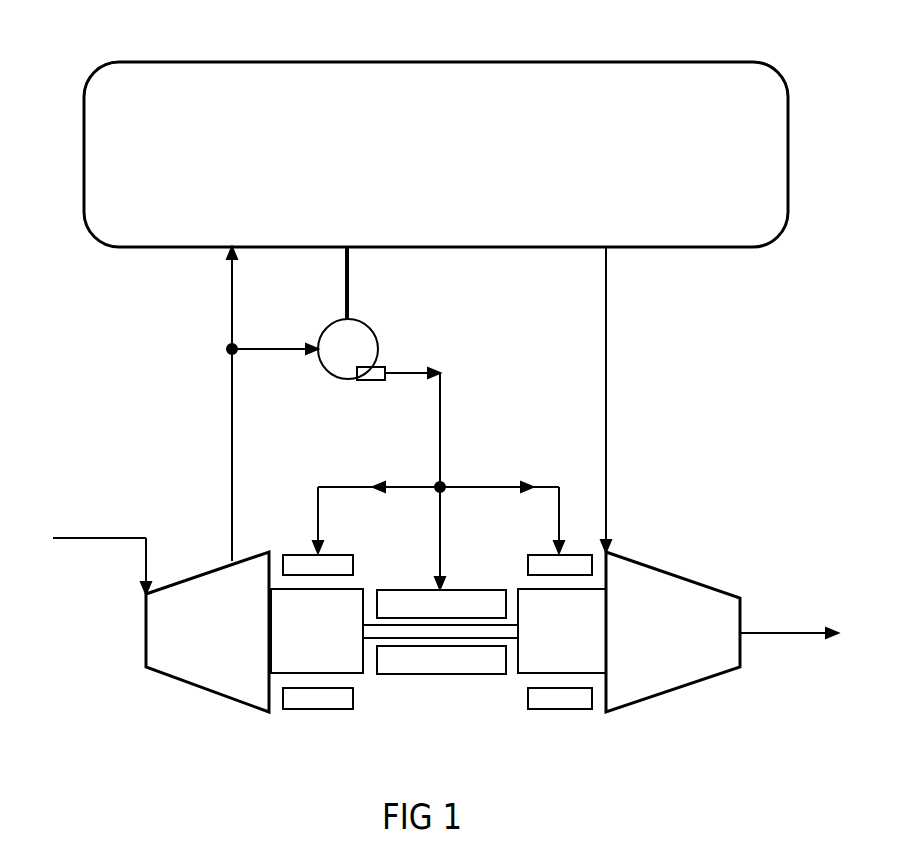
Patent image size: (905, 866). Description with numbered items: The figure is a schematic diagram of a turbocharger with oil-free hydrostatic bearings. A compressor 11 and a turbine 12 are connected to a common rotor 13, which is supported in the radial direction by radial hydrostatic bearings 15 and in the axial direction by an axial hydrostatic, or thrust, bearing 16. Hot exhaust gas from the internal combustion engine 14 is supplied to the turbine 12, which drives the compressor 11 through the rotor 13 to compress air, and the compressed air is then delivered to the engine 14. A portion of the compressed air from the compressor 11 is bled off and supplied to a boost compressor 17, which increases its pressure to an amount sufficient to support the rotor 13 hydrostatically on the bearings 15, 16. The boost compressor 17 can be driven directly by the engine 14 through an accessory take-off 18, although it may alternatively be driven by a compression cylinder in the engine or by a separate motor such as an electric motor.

The compressor 11 is at (198, 649).
The turbine 12 is at (665, 647).
The rotor 13 is at (400, 633).
The internal combustion engine 14 is at (488, 152).
The radial hydrostatic bearings 15 is at (325, 699).
The axial hydrostatic bearing 16 is at (458, 660).
The boost compressor 17 is at (345, 346).
The accessory take-off 18 is at (342, 280).